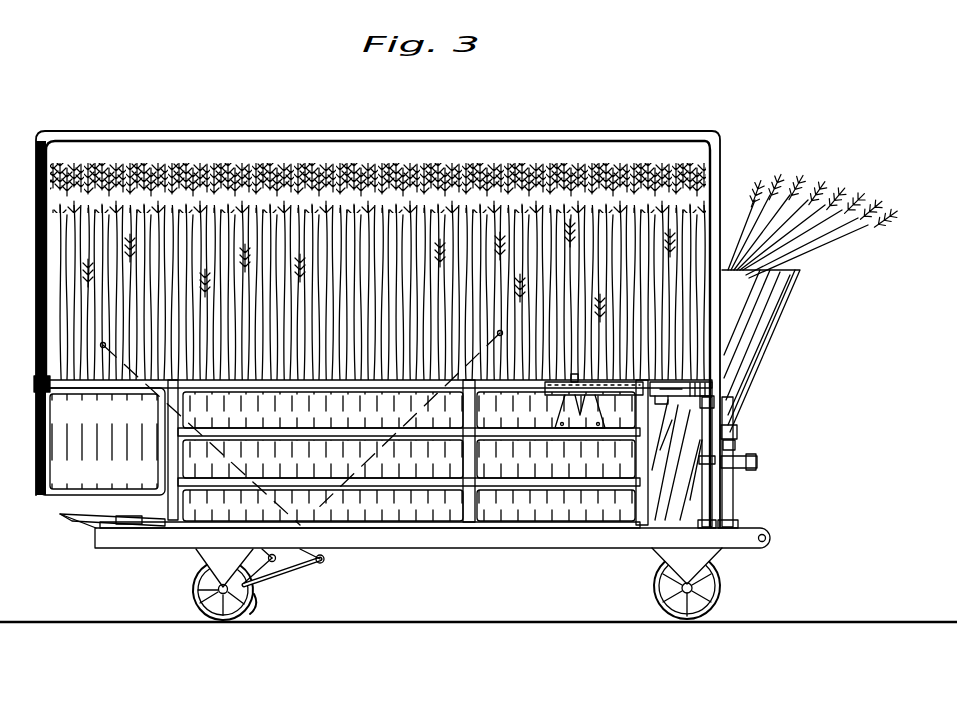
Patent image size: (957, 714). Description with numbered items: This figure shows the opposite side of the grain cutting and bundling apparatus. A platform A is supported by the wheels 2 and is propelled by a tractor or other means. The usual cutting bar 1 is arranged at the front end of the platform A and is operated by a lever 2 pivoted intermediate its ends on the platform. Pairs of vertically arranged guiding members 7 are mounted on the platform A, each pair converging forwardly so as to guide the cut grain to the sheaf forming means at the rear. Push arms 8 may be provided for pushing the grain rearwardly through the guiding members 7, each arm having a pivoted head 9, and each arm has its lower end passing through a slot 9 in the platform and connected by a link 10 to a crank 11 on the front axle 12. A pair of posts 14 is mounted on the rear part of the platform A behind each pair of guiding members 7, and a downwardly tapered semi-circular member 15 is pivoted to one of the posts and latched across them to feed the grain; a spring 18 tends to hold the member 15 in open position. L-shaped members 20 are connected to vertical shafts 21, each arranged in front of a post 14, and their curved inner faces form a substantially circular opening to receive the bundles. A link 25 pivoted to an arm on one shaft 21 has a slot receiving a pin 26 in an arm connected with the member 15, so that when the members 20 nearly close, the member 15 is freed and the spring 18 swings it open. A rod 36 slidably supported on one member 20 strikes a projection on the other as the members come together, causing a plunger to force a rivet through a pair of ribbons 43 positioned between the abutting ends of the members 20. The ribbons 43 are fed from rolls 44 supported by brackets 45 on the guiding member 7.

The cutting bar 1 is at (58, 517).
The wheels 2 is at (722, 592).
The guiding members 7 is at (440, 490).
The push arms 8 is at (228, 463).
The pivoted head 9 is at (106, 345).
The link 10 is at (288, 572).
The crank 11 is at (250, 620).
The front axle 12 is at (205, 612).
The posts 14 is at (735, 505).
The semi-circular member 15 is at (782, 316).
The spring 18 is at (737, 437).
The L-shaped members 20 is at (714, 390).
The vertical shafts 21 is at (705, 505).
The link 25 is at (758, 466).
The pin 26 is at (752, 454).
The rod 36 is at (662, 400).
The ribbons 43 is at (617, 384).
The rolls 44 is at (563, 385).
The brackets 45 is at (585, 422).
The platform A is at (520, 524).